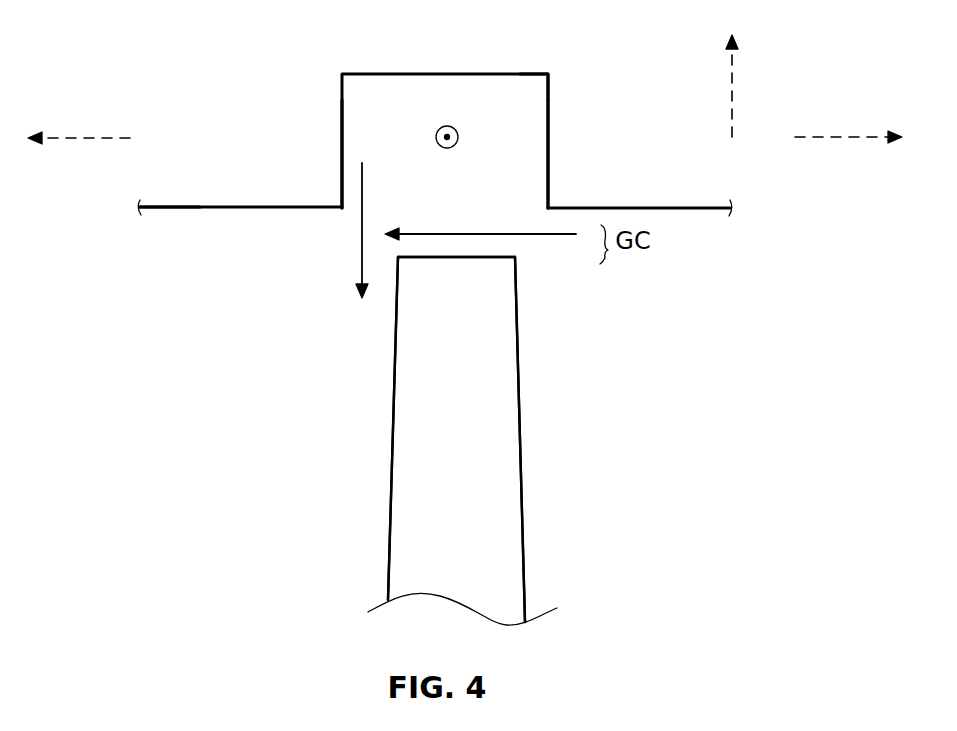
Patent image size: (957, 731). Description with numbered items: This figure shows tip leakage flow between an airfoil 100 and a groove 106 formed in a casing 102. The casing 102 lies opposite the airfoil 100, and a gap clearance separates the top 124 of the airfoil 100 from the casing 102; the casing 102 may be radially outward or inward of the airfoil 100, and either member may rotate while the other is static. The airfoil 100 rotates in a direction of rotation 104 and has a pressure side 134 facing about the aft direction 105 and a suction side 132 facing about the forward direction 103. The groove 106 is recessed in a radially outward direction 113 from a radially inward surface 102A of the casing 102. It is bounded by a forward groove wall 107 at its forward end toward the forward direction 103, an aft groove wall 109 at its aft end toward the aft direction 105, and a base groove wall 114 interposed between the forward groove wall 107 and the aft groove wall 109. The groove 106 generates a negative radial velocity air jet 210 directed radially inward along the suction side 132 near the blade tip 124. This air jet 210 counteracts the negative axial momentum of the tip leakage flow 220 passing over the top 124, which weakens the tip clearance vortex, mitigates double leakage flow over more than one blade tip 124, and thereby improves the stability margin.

The airfoil 100 is at (493, 508).
The casing 102 is at (215, 206).
The radially inward surface 102A is at (163, 210).
The forward direction 103 is at (73, 139).
The direction of rotation 104 is at (440, 131).
The aft direction 105 is at (833, 137).
The groove 106 is at (483, 73).
The forward groove wall 107 is at (341, 143).
The aft groove wall 109 is at (550, 143).
The radially outward direction 113 is at (733, 80).
The base groove wall 114 is at (520, 73).
The top of the airfoil 124 is at (457, 259).
The suction side 132 is at (390, 460).
The pressure side 134 is at (523, 460).
The negative radial velocity air jet 210 is at (361, 233).
The tip leakage flow 220 is at (550, 236).